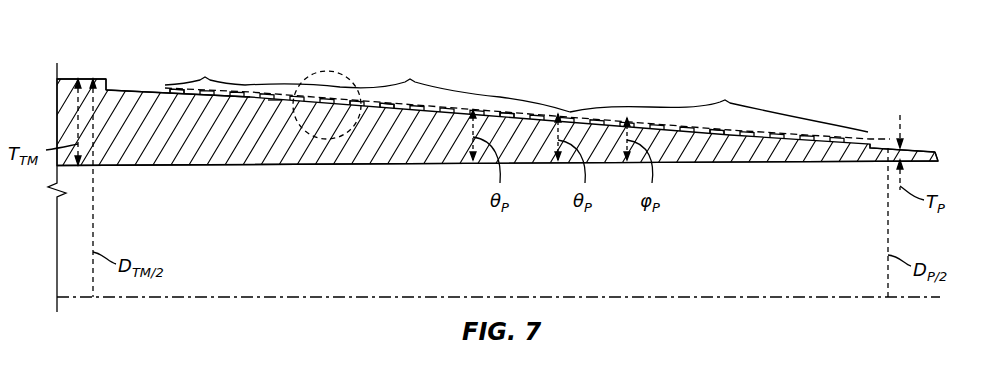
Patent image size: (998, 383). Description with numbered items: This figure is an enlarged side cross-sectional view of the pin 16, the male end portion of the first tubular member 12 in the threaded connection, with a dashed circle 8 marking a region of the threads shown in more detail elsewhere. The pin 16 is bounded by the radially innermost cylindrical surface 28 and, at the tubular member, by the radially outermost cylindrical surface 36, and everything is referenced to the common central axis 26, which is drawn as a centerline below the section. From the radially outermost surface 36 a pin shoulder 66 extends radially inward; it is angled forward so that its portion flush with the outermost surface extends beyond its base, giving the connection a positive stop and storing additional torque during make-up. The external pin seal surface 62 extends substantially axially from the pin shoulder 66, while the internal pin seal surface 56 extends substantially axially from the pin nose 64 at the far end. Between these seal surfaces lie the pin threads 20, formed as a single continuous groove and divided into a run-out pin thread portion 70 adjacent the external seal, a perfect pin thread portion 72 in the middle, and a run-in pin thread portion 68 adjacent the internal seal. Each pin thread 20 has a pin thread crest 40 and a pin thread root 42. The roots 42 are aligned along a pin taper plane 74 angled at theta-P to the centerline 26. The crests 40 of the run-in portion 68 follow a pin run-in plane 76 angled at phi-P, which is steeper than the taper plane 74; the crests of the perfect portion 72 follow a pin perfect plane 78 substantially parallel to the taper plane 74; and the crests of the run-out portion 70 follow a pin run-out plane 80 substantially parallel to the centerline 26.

The detail circle 8 is at (327, 72).
The first tubular member 12 is at (68, 106).
The pin 16 is at (209, 142).
The pin threads 20 is at (393, 108).
The central axis 26 is at (476, 296).
The radially innermost cylindrical surface 28 is at (335, 165).
The radially outermost cylindrical surface 36 is at (83, 79).
The pin thread crest 40 is at (260, 95).
The pin thread root 42 is at (275, 105).
The internal pin seal surface 56 is at (912, 148).
The external pin seal surface 62 is at (133, 90).
The pin nose 64 is at (940, 160).
The pin shoulder 66 is at (106, 80).
The run-in pin thread portion 68 is at (719, 106).
The run-out pin thread portion 70 is at (205, 70).
The perfect pin thread portion 72 is at (407, 85).
The pin taper plane 74 is at (357, 108).
The pin run-in plane 76 is at (733, 137).
The pin perfect plane 78 is at (506, 108).
The pin run-out plane 80 is at (222, 92).